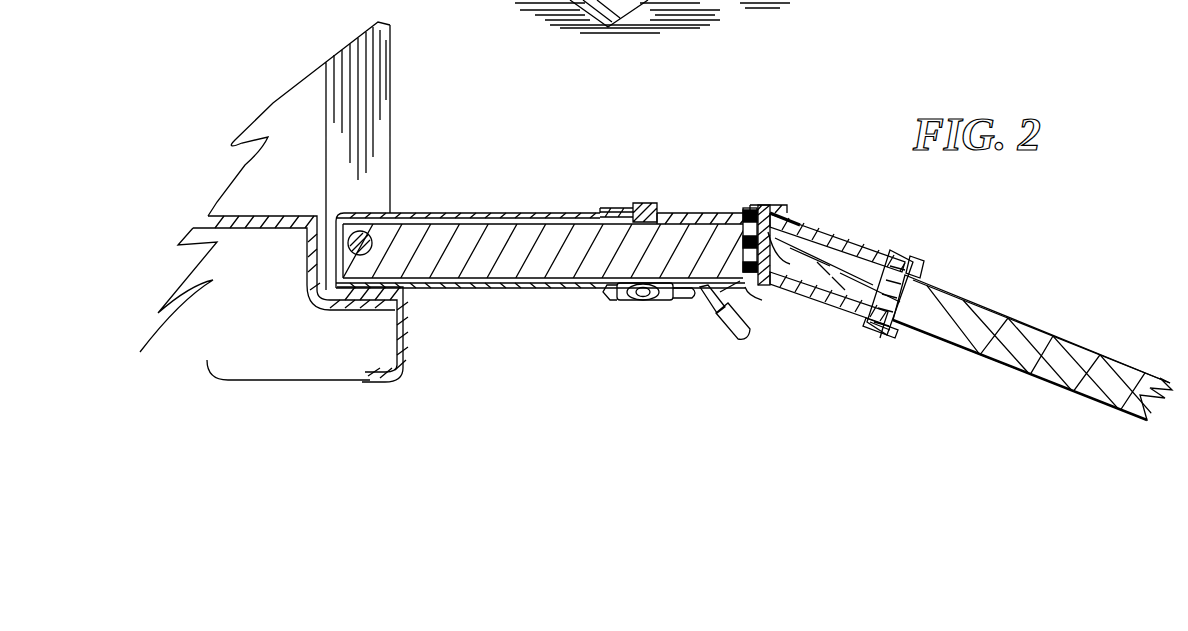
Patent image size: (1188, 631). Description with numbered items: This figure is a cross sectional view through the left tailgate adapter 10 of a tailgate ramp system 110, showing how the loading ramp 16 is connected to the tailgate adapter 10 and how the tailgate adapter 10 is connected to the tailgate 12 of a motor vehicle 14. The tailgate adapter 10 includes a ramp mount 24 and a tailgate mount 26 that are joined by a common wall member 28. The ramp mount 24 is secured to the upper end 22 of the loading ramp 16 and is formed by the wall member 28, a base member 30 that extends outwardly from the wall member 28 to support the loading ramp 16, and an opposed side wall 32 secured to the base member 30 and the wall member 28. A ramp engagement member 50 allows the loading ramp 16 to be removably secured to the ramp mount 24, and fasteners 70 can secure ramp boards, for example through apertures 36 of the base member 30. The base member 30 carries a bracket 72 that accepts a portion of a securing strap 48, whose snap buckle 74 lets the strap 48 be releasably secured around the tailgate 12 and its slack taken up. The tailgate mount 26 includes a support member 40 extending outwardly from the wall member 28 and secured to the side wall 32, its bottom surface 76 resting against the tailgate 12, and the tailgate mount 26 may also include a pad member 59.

The tailgate adapter 10 is at (718, 210).
The tailgate 12 is at (532, 284).
The motor vehicle 14 is at (383, 92).
The loading ramp 16 is at (1010, 320).
The upper end 22 is at (980, 302).
The ramp mount 24 is at (882, 252).
The tailgate mount 26 is at (585, 225).
The wall member 28 is at (871, 291).
The base member 30 is at (812, 300).
The side wall 32 is at (795, 240).
The apertures 36 is at (828, 312).
The support member 40 is at (688, 212).
The securing strap 48 is at (490, 212).
The ramp engagement member 50 is at (840, 235).
The pad member 59 is at (776, 224).
The fasteners 70 is at (918, 260).
The bracket 72 is at (745, 335).
The snap buckle 74 is at (665, 302).
The bottom surface 76 is at (700, 224).
The tailgate ramp system 110 is at (979, 266).